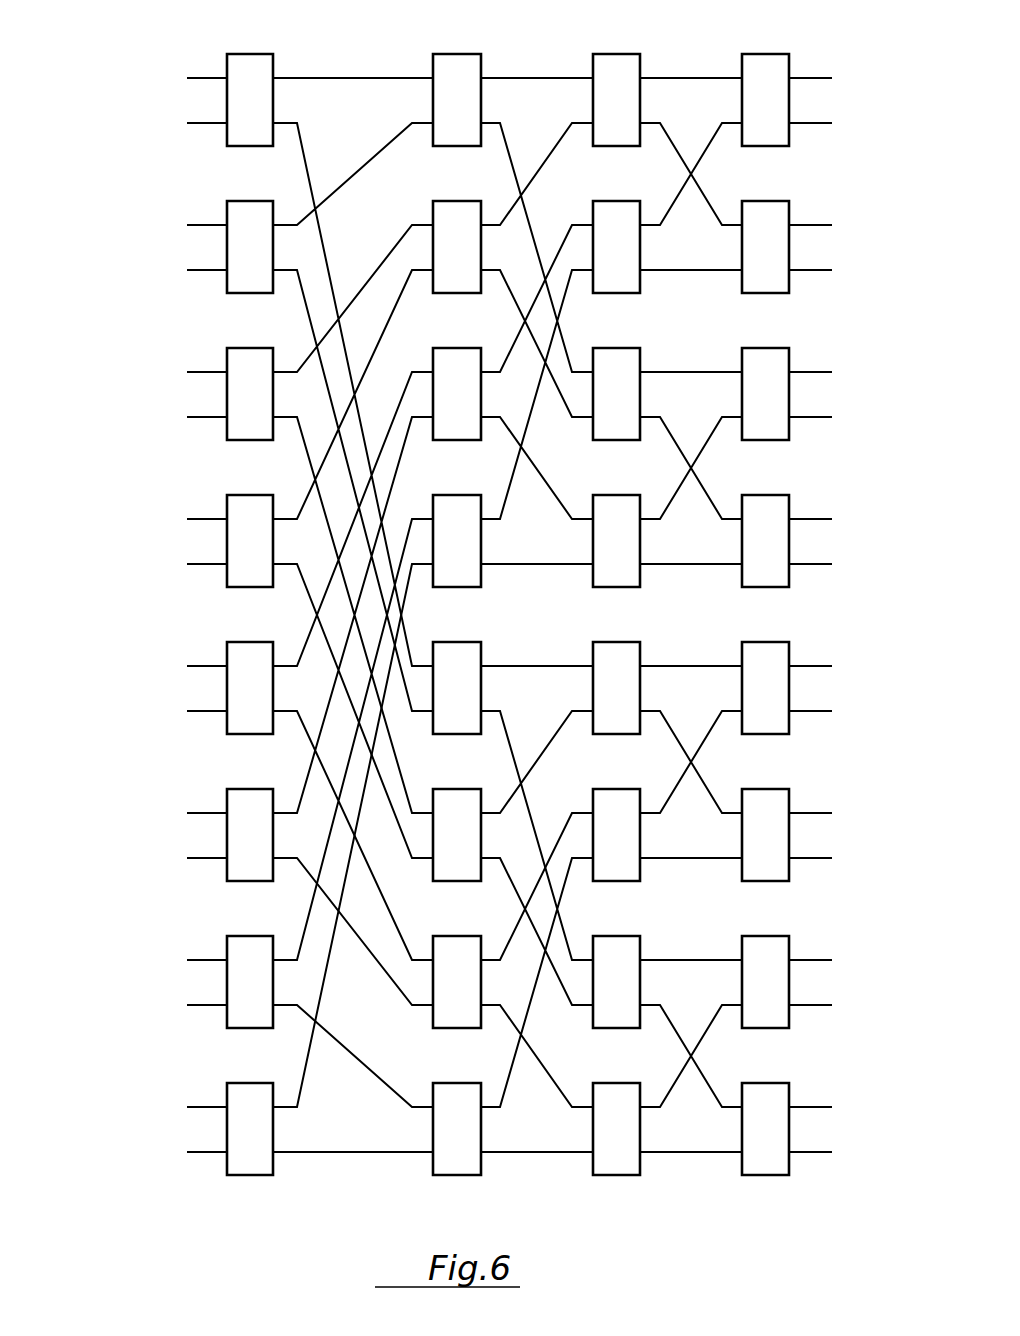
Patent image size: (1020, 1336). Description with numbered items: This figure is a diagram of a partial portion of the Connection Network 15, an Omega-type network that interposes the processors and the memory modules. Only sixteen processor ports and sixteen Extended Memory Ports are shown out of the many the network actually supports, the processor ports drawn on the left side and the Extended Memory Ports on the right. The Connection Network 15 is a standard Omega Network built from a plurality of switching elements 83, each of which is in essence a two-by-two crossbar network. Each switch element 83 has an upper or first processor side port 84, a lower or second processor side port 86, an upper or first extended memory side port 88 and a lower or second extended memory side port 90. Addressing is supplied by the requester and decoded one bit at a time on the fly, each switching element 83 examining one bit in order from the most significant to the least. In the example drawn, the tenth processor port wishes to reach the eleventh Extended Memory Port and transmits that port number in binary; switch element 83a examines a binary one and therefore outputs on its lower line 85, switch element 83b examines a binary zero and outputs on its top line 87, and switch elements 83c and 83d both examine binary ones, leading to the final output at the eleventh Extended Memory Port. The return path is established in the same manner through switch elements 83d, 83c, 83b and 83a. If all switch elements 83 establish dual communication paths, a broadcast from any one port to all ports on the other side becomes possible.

The Connection Network 15 is at (545, 12).
The switching element 83 is at (235, 60).
The switching element 83a is at (247, 790).
The switching element 83b is at (443, 940).
The switching element 83c is at (608, 797).
The switching element 83d is at (763, 797).
The first processor side port 84 is at (203, 1105).
The lower line 85 is at (293, 862).
The second processor side port 86 is at (203, 1154).
The top line 87 is at (512, 940).
The first extended memory side port 88 is at (299, 1088).
The second extended memory side port 90 is at (340, 1154).